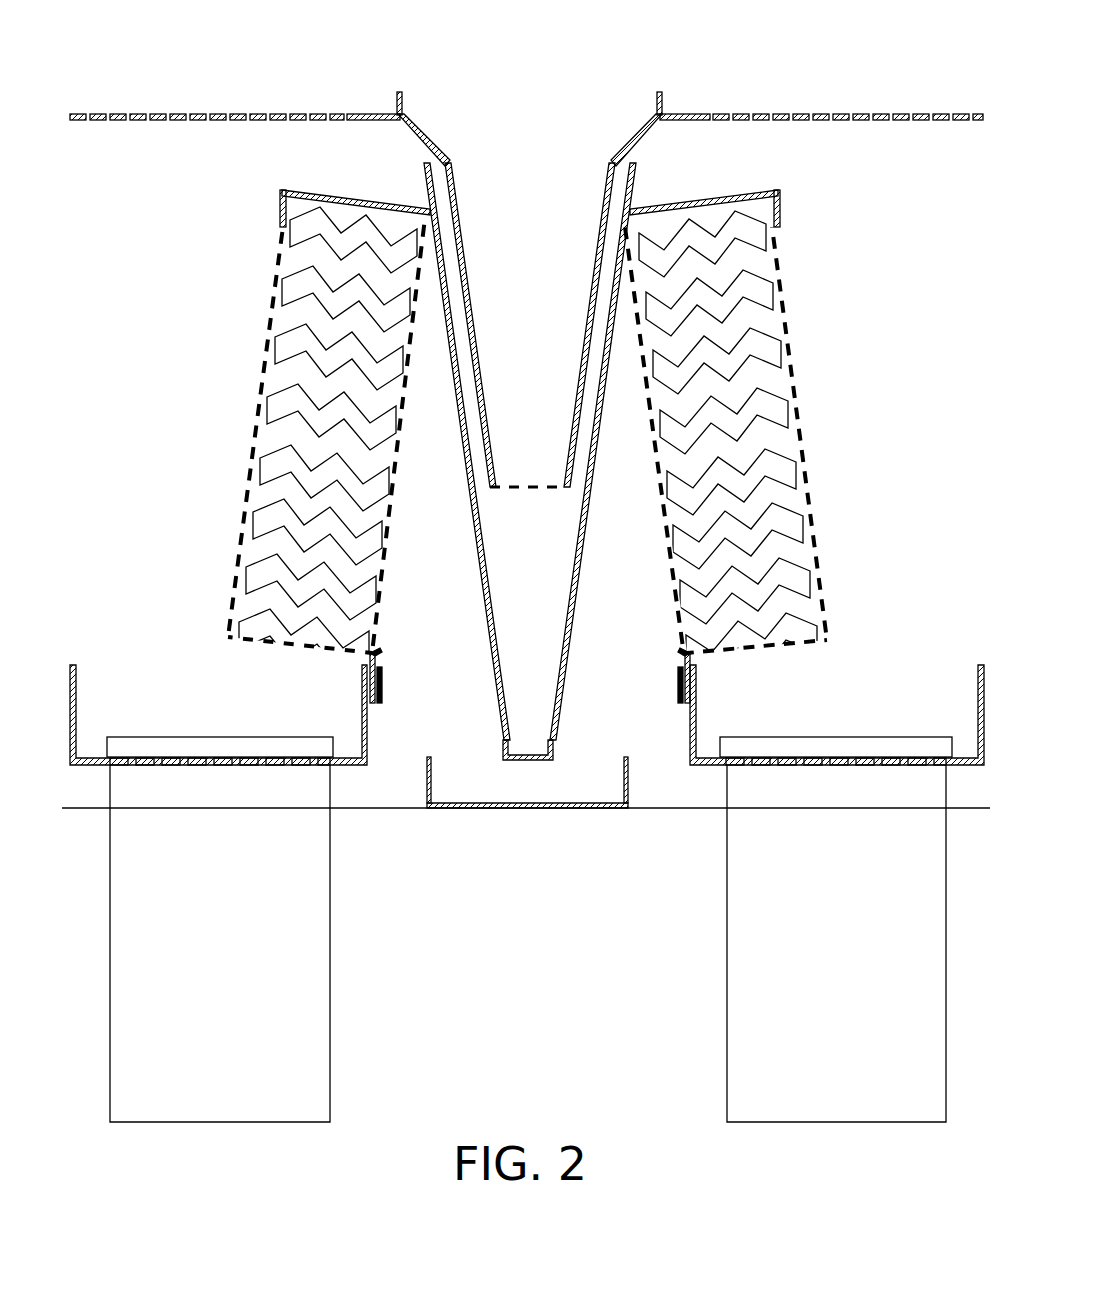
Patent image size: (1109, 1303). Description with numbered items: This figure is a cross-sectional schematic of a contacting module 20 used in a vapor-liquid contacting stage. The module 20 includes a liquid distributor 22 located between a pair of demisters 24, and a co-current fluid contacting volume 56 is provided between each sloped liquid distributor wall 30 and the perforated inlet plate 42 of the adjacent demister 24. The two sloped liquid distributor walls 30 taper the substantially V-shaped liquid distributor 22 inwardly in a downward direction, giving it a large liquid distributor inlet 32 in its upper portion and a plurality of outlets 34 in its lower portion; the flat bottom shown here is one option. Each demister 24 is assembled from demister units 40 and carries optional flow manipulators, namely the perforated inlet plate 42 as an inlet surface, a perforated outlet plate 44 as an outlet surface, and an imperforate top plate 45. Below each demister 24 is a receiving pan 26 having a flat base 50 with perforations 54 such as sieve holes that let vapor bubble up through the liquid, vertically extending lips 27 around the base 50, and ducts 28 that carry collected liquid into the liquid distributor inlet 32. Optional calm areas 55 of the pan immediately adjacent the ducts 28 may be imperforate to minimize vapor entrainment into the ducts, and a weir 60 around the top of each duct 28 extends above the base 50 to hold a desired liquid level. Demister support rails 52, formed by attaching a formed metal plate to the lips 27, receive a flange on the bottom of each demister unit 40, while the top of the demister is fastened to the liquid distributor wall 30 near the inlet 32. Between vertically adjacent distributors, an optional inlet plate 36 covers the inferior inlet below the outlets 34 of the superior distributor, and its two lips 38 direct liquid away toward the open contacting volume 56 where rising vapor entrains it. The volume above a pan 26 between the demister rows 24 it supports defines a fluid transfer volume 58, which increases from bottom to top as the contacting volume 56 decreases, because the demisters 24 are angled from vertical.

The contacting module 20 is at (142, 198).
The liquid distributor 22 is at (470, 480).
The demister 24 is at (254, 270).
The receiving pan 26 is at (282, 90).
The lip 27 is at (76, 673).
The duct 28 is at (470, 185).
The liquid distributor wall 30 is at (598, 534).
The liquid distributor inlet 32 is at (452, 160).
The outlet 34 is at (500, 738).
The inlet plate 36 is at (482, 803).
The lip 38 is at (427, 777).
The demister unit 40 is at (312, 447).
The perforated inlet plate 42 is at (410, 387).
The perforated outlet plate 44 is at (272, 331).
The imperforate top plate 45 is at (333, 192).
The base 50 is at (344, 114).
The demister support rail 52 is at (388, 683).
The perforations 54 is at (744, 114).
The calm area 55 is at (357, 114).
The fluid contacting volume 56 is at (416, 572).
The fluid transfer volume 58 is at (144, 452).
The weir 60 is at (660, 92).